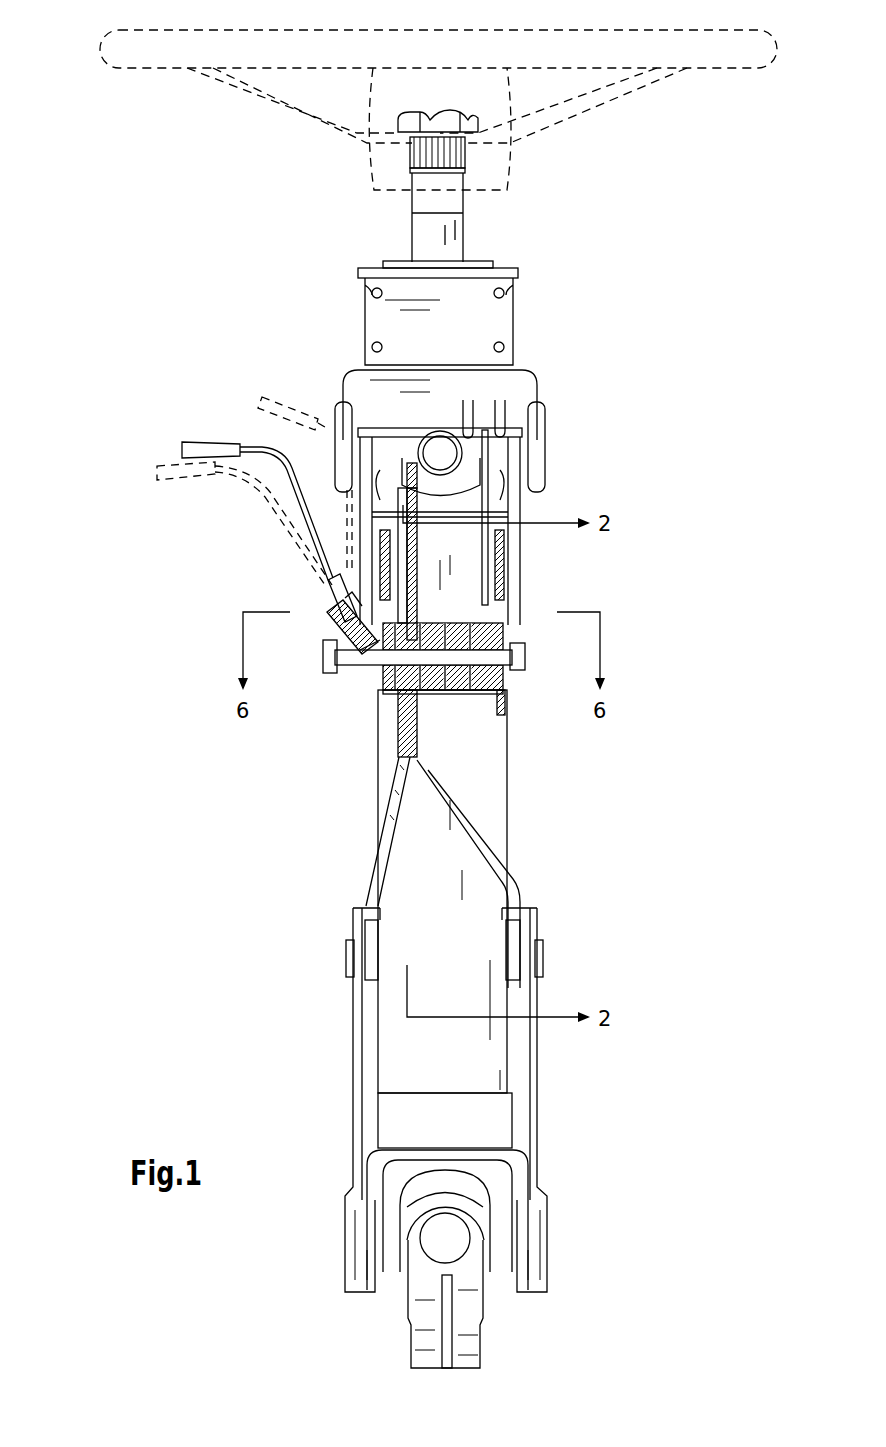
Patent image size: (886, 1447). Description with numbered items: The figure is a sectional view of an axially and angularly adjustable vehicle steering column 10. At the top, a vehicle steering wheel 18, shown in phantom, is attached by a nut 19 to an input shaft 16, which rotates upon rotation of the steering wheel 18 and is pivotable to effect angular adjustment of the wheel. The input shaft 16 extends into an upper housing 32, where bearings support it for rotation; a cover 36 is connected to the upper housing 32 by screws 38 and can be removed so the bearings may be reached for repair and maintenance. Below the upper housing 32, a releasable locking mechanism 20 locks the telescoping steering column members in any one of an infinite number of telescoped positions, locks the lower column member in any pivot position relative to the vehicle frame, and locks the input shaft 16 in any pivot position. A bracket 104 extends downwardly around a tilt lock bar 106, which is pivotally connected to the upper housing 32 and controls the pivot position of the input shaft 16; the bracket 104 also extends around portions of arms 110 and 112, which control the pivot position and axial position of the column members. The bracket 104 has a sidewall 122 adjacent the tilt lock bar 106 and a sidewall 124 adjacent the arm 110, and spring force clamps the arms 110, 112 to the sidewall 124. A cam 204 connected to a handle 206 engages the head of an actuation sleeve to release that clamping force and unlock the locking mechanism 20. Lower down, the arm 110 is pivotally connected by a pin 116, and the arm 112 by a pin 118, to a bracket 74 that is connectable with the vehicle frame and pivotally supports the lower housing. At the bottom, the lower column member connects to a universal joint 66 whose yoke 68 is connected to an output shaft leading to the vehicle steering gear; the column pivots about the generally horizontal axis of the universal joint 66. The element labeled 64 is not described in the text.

The steering column 10 is at (674, 541).
The input shaft 16 is at (447, 233).
The vehicle steering wheel 18 is at (668, 38).
The nut 19 is at (478, 120).
The releasable locking mechanism 20 is at (355, 740).
The upper housing 32 is at (513, 383).
The cover 36 is at (410, 323).
The screws 38 is at (371, 293).
The yoke 64 is at (492, 1193).
The universal joint 66 is at (454, 1238).
The yoke 68 is at (468, 1313).
The bracket 74 is at (353, 1070).
The bracket 104 is at (500, 615).
The tilt lock bar 106 is at (485, 467).
The arm 110 is at (388, 841).
The arm 112 is at (482, 850).
The pin 116 is at (346, 958).
The pin 118 is at (541, 953).
The sidewall 122 is at (503, 553).
The sidewall 124 is at (385, 676).
The cam 204 is at (332, 627).
The handle 206 is at (196, 446).